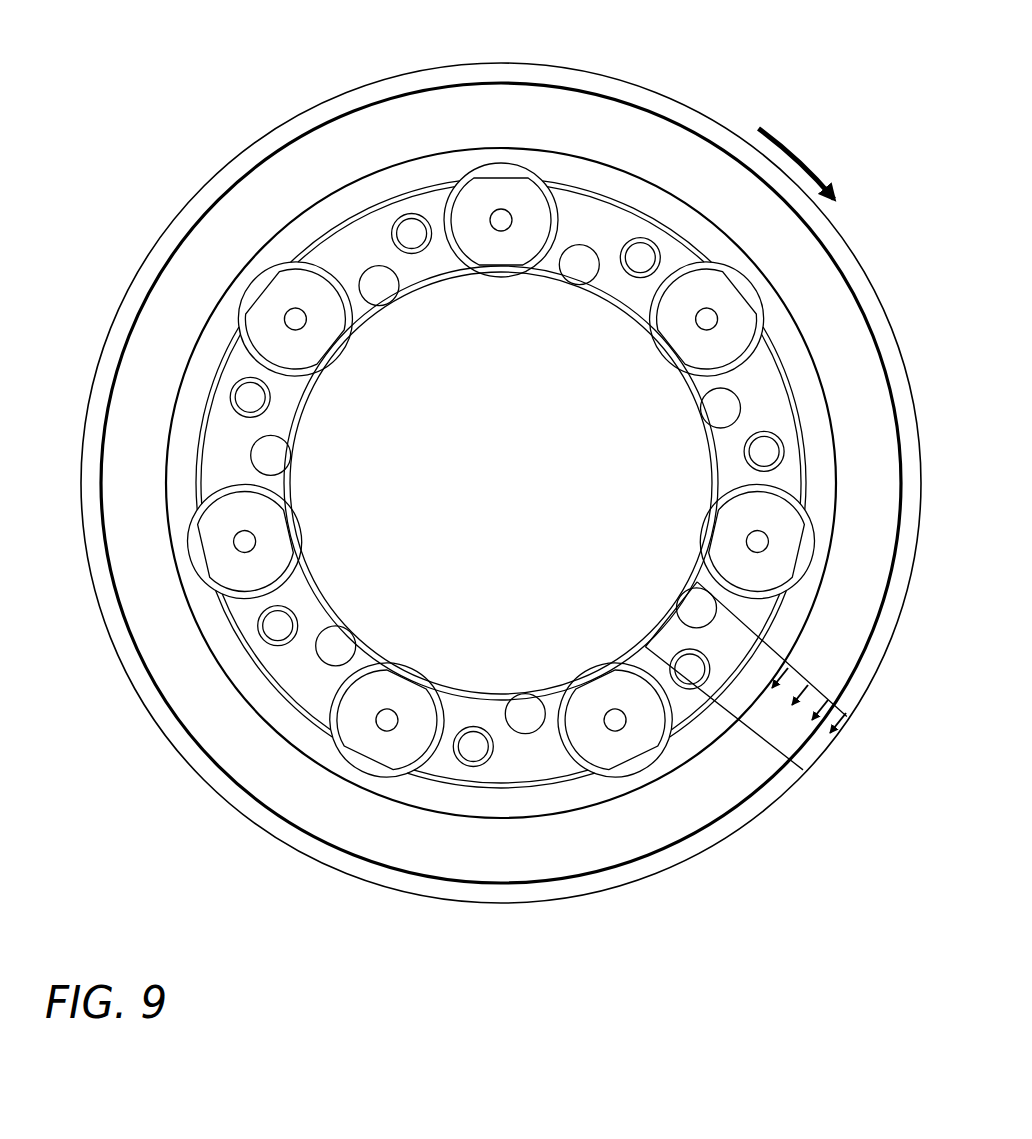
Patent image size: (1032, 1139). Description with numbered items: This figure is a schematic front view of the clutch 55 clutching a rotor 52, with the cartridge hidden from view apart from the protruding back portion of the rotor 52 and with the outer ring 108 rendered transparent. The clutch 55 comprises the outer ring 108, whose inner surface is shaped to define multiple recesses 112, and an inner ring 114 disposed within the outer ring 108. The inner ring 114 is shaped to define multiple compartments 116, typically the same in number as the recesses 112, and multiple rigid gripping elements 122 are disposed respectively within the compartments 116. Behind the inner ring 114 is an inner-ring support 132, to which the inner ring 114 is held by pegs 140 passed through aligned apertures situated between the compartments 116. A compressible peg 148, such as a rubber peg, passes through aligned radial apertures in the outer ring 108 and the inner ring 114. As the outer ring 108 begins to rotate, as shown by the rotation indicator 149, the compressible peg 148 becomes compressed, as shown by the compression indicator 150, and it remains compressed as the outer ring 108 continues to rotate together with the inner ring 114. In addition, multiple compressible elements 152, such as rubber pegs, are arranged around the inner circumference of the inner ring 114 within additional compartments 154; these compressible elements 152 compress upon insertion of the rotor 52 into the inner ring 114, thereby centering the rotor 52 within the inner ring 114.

The rotor 52 is at (524, 496).
The clutch 55 is at (830, 137).
The outer ring 108 is at (167, 229).
The recesses 112 is at (758, 293).
The inner ring 114 is at (510, 793).
The compartments 116 is at (663, 362).
The gripping elements 122 is at (507, 166).
The inner-ring support 132 is at (434, 151).
The pegs 140 is at (242, 403).
The compressible peg 148 is at (680, 619).
The rotation indicator 149 is at (772, 129).
The compression indicator 150 is at (822, 745).
The compressible elements 152 is at (283, 455).
The additional compartments 154 is at (589, 255).